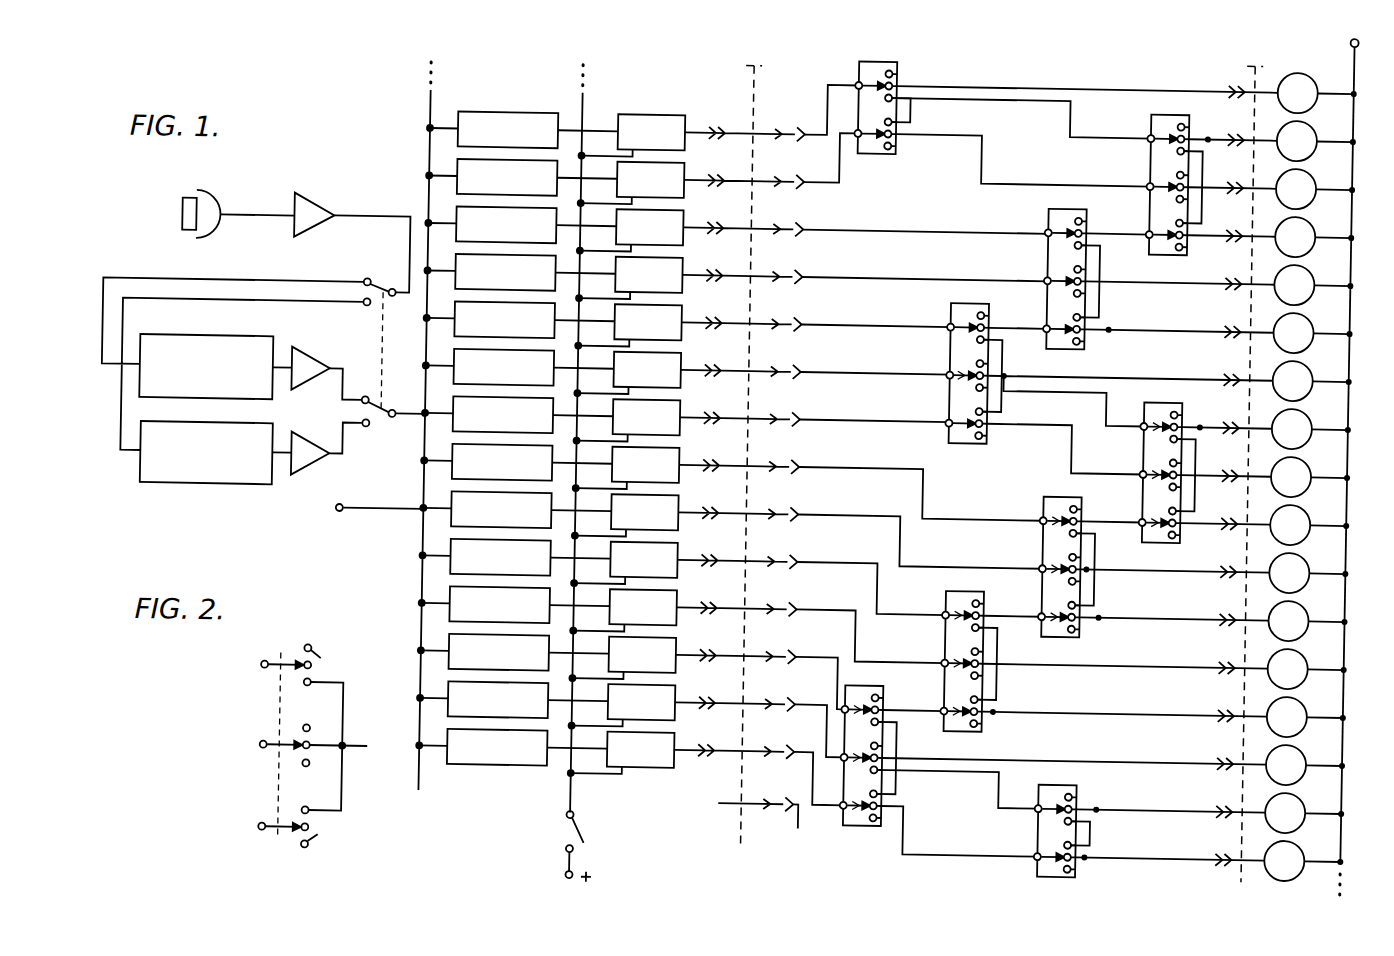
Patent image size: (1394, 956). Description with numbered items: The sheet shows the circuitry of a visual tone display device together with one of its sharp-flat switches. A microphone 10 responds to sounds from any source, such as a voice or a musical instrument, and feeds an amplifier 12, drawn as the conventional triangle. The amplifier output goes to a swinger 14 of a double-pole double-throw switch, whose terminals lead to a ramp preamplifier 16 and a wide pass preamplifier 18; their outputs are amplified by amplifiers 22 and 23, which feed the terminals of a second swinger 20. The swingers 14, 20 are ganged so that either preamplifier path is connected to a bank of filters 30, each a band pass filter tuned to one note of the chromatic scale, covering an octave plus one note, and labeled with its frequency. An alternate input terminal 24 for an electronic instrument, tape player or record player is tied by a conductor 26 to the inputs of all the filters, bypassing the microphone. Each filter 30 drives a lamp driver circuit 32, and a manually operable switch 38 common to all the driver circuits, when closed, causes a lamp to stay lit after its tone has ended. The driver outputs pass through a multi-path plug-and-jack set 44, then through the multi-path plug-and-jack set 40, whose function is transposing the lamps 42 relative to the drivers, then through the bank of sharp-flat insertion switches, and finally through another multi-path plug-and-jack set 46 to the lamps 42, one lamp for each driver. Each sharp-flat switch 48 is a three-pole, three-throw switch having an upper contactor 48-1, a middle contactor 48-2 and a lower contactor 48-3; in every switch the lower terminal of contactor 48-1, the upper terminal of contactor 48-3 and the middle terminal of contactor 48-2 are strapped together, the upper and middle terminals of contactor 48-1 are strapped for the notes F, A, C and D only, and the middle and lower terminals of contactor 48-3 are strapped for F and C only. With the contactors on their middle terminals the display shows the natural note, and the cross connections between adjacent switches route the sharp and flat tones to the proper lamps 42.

In FIG. 1, the microphone 10 is at (209, 178).
In FIG. 1, the amplifier 12 is at (320, 197).
In FIG. 1, the swinger 14 is at (392, 265).
In FIG. 1, the ramp preamplifier 16 is at (187, 332).
In FIG. 1, the wide pass preamplifier 18 is at (193, 488).
In FIG. 1, the swinger 20 is at (396, 410).
In FIG. 1, the amplifier 22 is at (333, 344).
In FIG. 1, the amplifier 23 is at (312, 463).
In FIG. 1, the input terminal 24 is at (342, 510).
In FIG. 1, the conductor 26 is at (386, 501).
In FIG. 1, the filters 30 is at (488, 457).
In FIG. 1, the lamp driver circuit 32 is at (678, 676).
In FIG. 1, the manually operable switch 38 is at (596, 836).
In FIG. 1, the multi-path plug-and-jack set 40 is at (796, 107).
In FIG. 1, the lamps 42 is at (1300, 43).
In FIG. 1, the multi-path plug-and-jack set 44 is at (716, 99).
In FIG. 1, the multi-path plug-and-jack set 46 is at (1214, 63).
In FIG. 1, the sharp-flat insertion switch 48 is at (851, 824).
In FIG. 2, the sharp-flat insertion switch 48 is at (270, 828).
In FIG. 1, the upper contactor 48-1 is at (994, 568).
In FIG. 1, the middle contactor 48-2 is at (966, 567).
In FIG. 1, the lower contactor 48-3 is at (959, 663).